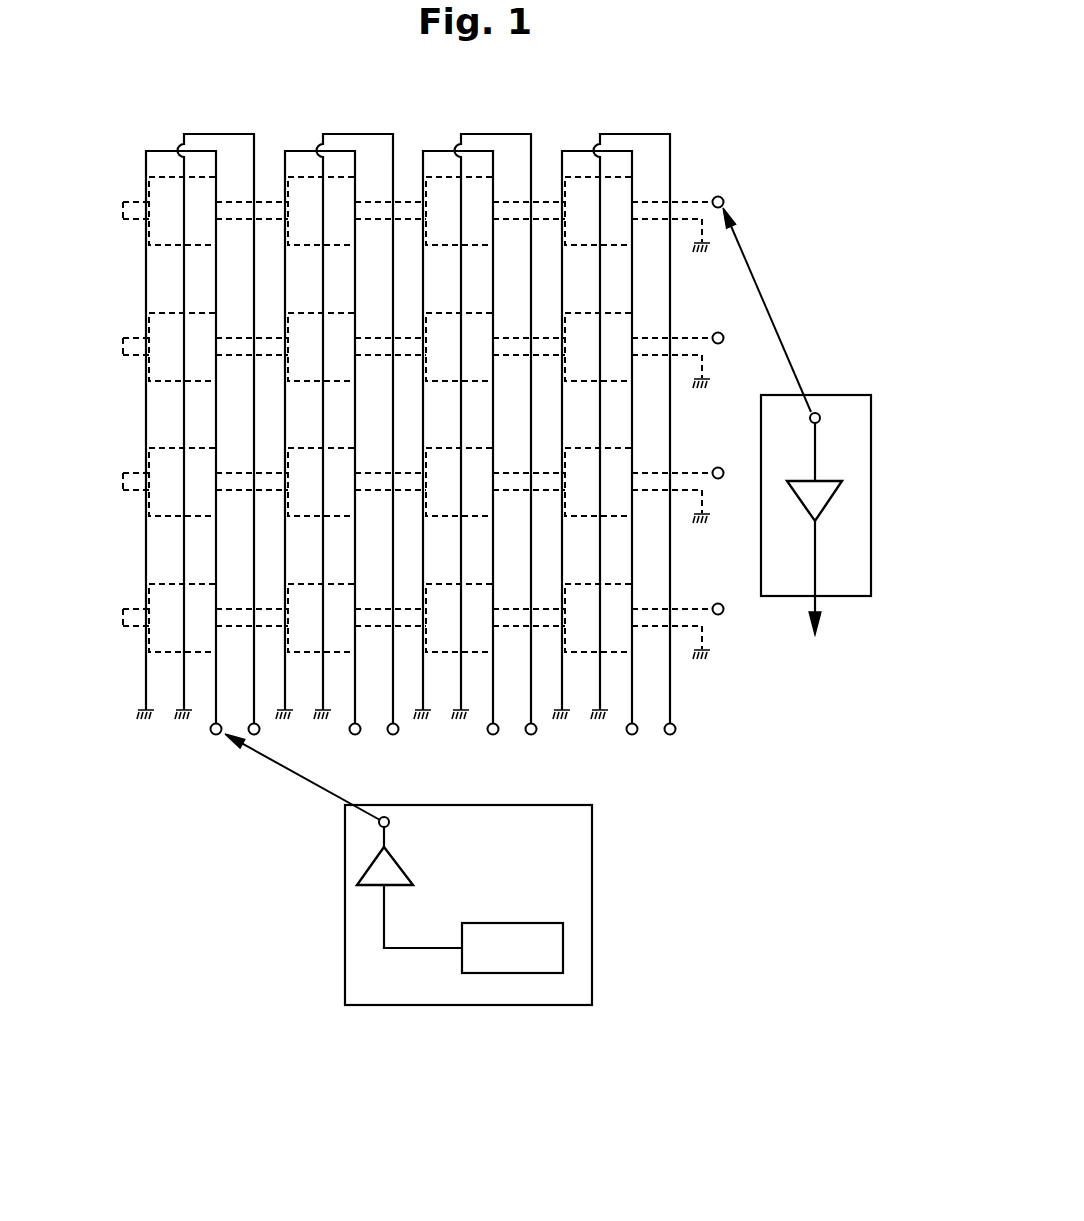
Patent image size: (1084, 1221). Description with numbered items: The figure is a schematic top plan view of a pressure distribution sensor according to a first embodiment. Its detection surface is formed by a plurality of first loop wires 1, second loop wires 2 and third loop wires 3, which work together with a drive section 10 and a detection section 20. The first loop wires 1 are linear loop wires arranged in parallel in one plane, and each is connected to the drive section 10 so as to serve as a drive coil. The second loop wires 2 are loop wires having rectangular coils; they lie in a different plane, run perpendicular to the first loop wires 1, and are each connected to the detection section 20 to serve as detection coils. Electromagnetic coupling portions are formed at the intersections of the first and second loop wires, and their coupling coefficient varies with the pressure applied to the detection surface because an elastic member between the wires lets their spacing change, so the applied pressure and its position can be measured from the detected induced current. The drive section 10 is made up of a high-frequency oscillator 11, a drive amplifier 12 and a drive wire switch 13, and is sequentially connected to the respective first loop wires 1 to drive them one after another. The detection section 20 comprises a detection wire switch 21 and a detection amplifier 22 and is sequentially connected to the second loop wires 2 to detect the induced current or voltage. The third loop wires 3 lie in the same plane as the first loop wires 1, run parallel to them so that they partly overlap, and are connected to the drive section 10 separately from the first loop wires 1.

The first loop wire 1 is at (156, 150).
The second loop wire 2 is at (122, 206).
The third loop wire 3 is at (221, 133).
The drive section 10 is at (592, 871).
The high-frequency oscillator 11 is at (514, 975).
The drive amplifier 12 is at (408, 872).
The drive wire switch 13 is at (390, 821).
The detection section 20 is at (850, 597).
The detection wire switch 21 is at (821, 396).
The detection amplifier 22 is at (829, 507).